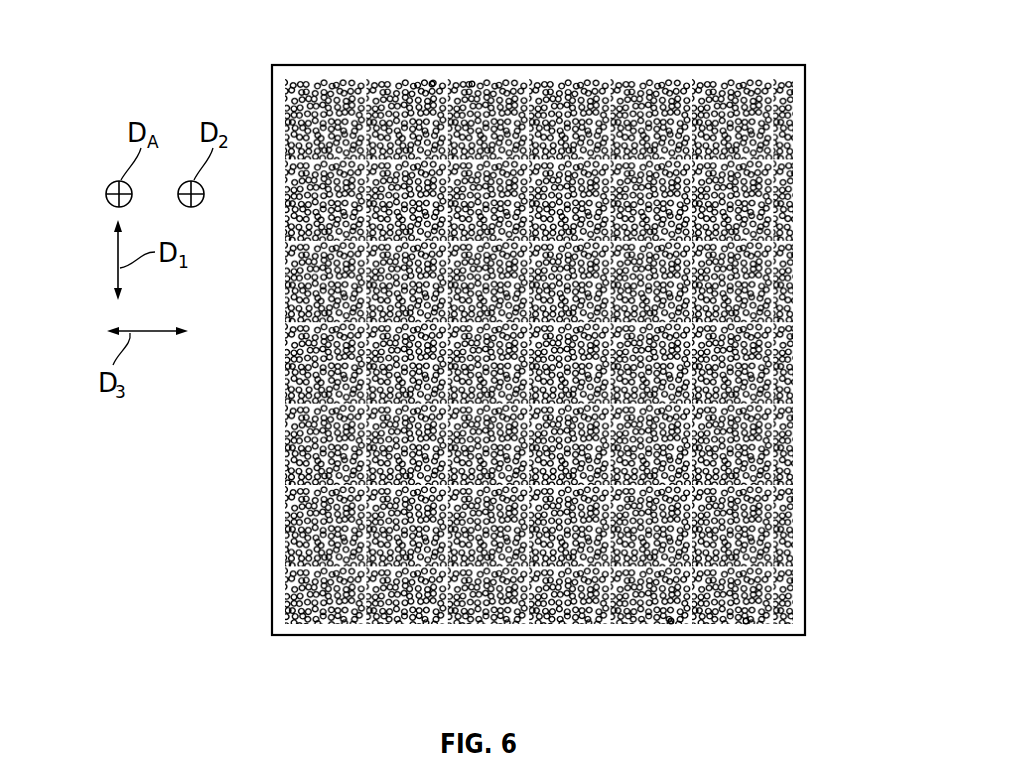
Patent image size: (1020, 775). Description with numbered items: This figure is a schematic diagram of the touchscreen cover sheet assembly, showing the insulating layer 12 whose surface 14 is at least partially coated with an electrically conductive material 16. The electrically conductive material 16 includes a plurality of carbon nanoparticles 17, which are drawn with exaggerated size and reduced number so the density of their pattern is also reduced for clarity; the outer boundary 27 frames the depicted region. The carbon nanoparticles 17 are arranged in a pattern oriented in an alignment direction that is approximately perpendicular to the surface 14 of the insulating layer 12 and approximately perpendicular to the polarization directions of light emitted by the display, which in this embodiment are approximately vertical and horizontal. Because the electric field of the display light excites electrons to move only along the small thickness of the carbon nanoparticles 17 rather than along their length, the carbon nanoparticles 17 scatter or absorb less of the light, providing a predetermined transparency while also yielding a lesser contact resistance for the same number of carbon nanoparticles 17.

The insulating layer 12 is at (670, 630).
The surface 14 is at (745, 628).
The electrically conductive material 16 is at (738, 73).
The carbon nanoparticles 17 is at (433, 80).
The boundary / frame 27 is at (798, 135).